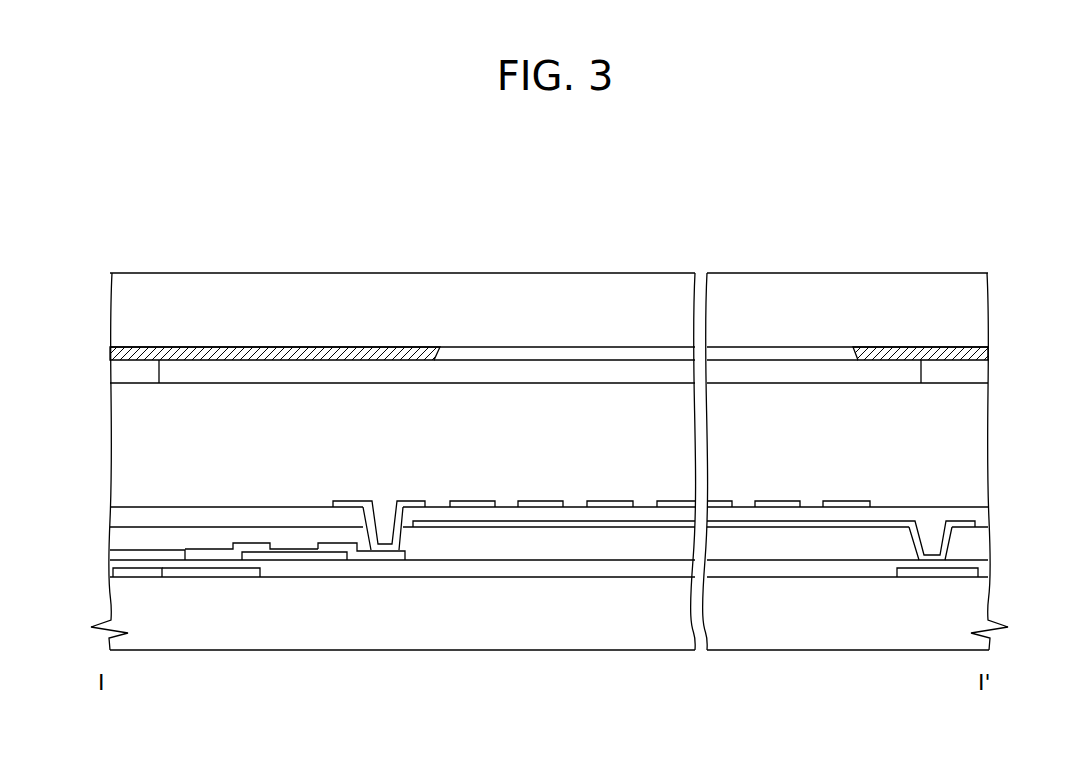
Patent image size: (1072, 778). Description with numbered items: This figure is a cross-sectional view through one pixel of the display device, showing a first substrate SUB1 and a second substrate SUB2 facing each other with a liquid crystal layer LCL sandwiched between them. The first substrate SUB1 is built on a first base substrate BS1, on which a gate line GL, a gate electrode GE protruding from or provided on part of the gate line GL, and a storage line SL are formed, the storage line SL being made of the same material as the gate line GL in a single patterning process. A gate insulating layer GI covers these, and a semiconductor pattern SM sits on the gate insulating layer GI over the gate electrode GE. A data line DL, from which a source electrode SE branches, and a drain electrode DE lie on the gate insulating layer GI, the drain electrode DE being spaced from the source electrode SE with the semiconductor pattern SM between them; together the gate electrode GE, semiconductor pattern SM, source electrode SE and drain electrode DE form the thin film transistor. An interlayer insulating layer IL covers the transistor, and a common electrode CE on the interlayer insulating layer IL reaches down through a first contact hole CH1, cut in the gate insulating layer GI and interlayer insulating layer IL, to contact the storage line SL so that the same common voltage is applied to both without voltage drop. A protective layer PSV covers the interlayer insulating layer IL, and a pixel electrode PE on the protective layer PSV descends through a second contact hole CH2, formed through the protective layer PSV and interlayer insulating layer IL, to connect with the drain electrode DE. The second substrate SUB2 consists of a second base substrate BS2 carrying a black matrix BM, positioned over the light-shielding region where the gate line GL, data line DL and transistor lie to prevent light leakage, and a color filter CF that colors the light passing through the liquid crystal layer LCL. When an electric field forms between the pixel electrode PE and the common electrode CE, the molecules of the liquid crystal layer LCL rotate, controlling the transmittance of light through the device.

The second substrate SUB2 is at (98, 303).
The second base substrate BS2 is at (975, 328).
The color filter CF is at (975, 370).
The black matrix BM is at (230, 352).
The liquid crystal layer LCL is at (122, 450).
The first substrate SUB1 is at (88, 507).
The first base substrate BS1 is at (975, 602).
The gate line GL is at (137, 572).
The gate electrode GE is at (213, 572).
The gate insulating layer GI is at (978, 567).
The semiconductor pattern SM is at (330, 553).
The data line DL is at (177, 553).
The source electrode SE is at (253, 546).
The drain electrode DE is at (385, 556).
The storage line SL is at (937, 571).
The interlayer insulating layer IL is at (978, 543).
The common electrode CE is at (835, 524).
The first contact hole CH1 is at (933, 527).
The protective layer PSV is at (978, 518).
The second contact hole CH2 is at (386, 500).
The pixel electrode PE is at (472, 506).